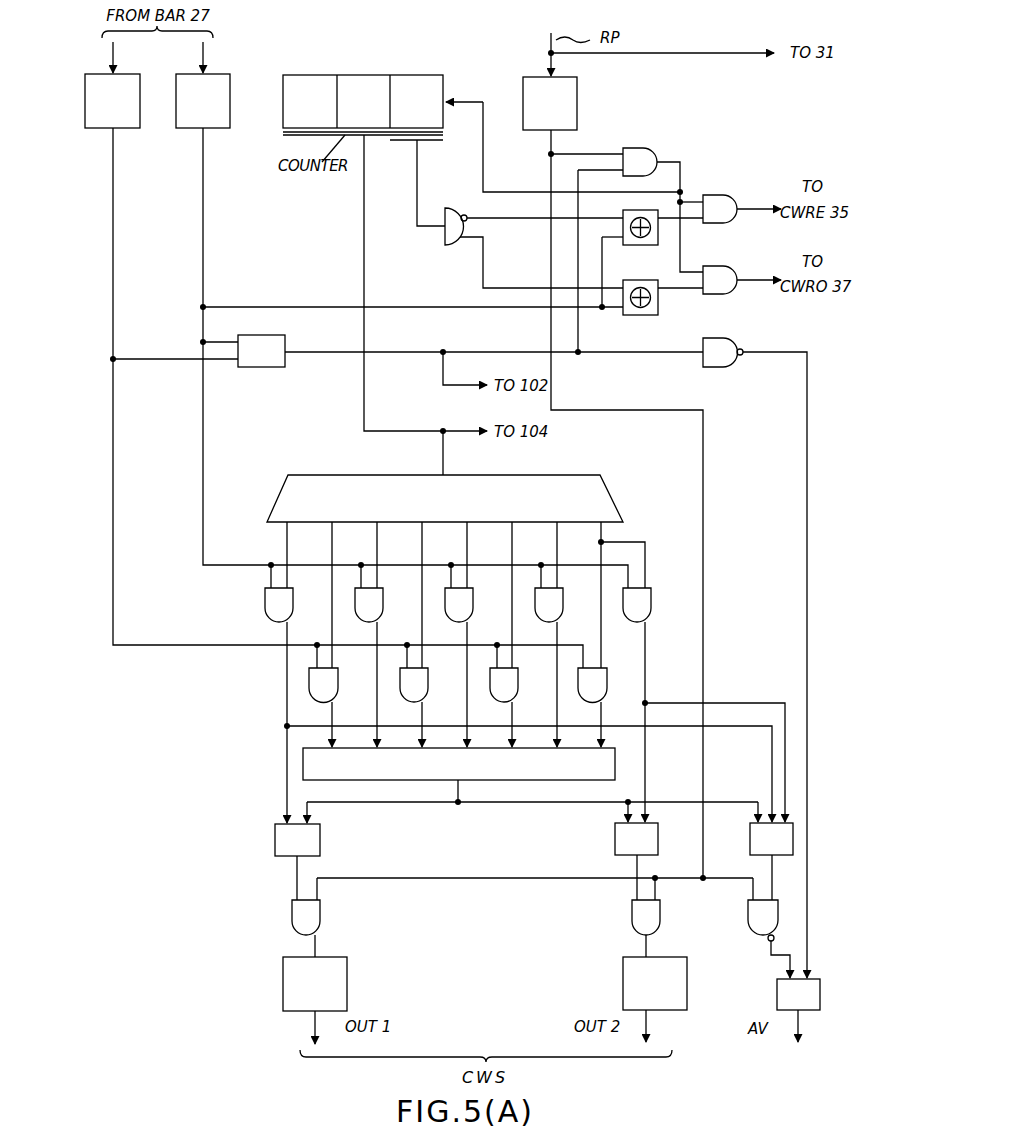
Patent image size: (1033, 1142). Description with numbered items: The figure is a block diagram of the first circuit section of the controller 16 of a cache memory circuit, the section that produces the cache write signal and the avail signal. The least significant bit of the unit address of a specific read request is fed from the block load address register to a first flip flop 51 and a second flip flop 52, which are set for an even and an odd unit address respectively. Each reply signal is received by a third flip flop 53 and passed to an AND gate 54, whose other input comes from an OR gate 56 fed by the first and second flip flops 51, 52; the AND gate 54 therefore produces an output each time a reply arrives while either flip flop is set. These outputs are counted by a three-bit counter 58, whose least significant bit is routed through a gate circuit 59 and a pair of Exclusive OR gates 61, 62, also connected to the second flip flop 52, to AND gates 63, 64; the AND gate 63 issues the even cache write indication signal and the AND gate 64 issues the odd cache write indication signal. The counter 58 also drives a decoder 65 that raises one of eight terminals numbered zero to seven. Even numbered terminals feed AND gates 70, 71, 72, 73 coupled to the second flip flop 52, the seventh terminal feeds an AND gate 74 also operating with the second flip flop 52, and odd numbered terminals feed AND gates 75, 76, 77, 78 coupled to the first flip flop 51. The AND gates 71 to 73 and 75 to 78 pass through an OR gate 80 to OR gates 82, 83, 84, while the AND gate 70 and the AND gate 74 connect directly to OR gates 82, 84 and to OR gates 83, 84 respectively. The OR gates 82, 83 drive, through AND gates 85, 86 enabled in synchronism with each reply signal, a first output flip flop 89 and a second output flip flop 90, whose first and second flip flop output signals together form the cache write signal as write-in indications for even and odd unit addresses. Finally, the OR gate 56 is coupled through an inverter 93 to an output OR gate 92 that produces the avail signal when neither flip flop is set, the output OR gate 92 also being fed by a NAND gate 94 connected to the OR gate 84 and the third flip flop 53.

The controller 16 is at (210, 810).
The first flip flop 51 is at (140, 84).
The second flip flop 52 is at (230, 84).
The third flip flop 53 is at (577, 98).
The AND gate 54 is at (640, 148).
The OR gate 56 is at (285, 340).
The counter 58 is at (363, 75).
The gate circuit 59 is at (448, 246).
The Exclusive OR gate 61 is at (645, 245).
The Exclusive OR gate 62 is at (645, 315).
The AND gate 63 is at (724, 195).
The AND gate 64 is at (724, 266).
The decoder 65 is at (610, 491).
The AND gate 70 is at (293, 610).
The AND gate 71 is at (383, 610).
The AND gate 72 is at (473, 610).
The AND gate 73 is at (563, 610).
The AND gate 74 is at (651, 610).
The AND gate 75 is at (338, 690).
The AND gate 76 is at (428, 690).
The AND gate 77 is at (518, 690).
The AND gate 78 is at (607, 690).
The OR gate 80 is at (615, 762).
The OR gate 82 is at (320, 840).
The OR gate 83 is at (615, 840).
The OR gate 84 is at (750, 840).
The AND gate 85 is at (320, 914).
The AND gate 86 is at (632, 914).
The first output flip flop 89 is at (347, 985).
The second output flip flop 90 is at (623, 985).
The output OR gate 92 is at (777, 995).
The inverter 93 is at (724, 338).
The NAND gate 94 is at (748, 914).